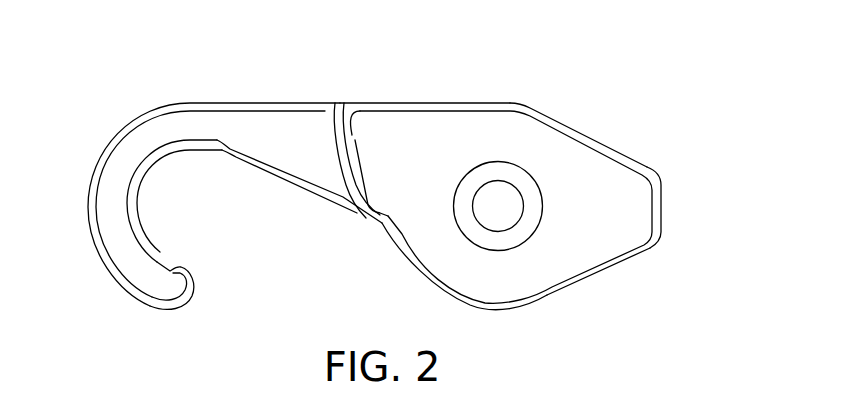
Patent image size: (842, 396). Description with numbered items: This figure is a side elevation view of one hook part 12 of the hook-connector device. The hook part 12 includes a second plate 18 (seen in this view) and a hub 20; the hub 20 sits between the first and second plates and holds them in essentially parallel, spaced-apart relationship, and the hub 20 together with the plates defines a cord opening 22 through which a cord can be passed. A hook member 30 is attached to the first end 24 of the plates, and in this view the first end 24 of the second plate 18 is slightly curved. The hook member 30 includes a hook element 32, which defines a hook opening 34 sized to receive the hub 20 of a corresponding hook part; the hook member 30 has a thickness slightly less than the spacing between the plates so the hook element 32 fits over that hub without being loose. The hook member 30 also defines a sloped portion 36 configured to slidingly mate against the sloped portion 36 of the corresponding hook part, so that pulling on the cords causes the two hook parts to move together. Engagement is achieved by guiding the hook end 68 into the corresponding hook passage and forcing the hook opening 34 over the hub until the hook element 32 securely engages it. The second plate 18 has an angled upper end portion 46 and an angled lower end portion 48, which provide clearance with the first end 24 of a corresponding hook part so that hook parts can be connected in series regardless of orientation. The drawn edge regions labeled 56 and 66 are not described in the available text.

The hook part 12 is at (631, 106).
The second plate 18 is at (628, 188).
The hub 20 is at (500, 165).
The cord opening 22 is at (498, 215).
The first end 24 is at (333, 138).
The hook member 30 is at (242, 108).
The hook element 32 is at (157, 246).
The hook opening 34 is at (269, 239).
The sloped portion 36 is at (285, 183).
The angled upper end portion 46 is at (588, 133).
The angled lower end portion 48 is at (607, 277).
The body portion 56 is at (403, 102).
The bottom curved edge 66 is at (497, 313).
The hook end 68 is at (195, 300).